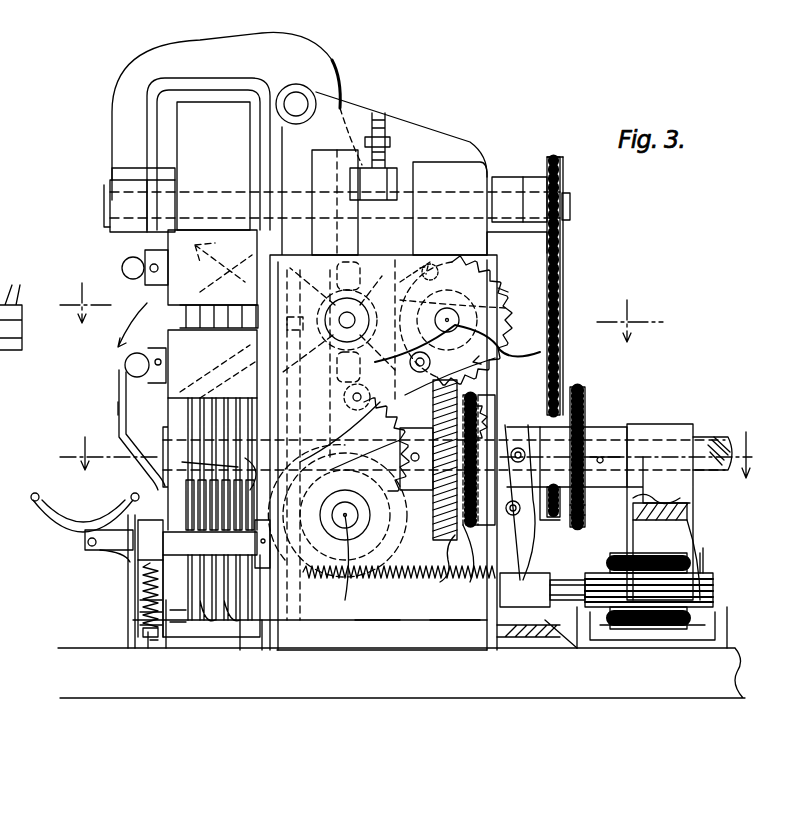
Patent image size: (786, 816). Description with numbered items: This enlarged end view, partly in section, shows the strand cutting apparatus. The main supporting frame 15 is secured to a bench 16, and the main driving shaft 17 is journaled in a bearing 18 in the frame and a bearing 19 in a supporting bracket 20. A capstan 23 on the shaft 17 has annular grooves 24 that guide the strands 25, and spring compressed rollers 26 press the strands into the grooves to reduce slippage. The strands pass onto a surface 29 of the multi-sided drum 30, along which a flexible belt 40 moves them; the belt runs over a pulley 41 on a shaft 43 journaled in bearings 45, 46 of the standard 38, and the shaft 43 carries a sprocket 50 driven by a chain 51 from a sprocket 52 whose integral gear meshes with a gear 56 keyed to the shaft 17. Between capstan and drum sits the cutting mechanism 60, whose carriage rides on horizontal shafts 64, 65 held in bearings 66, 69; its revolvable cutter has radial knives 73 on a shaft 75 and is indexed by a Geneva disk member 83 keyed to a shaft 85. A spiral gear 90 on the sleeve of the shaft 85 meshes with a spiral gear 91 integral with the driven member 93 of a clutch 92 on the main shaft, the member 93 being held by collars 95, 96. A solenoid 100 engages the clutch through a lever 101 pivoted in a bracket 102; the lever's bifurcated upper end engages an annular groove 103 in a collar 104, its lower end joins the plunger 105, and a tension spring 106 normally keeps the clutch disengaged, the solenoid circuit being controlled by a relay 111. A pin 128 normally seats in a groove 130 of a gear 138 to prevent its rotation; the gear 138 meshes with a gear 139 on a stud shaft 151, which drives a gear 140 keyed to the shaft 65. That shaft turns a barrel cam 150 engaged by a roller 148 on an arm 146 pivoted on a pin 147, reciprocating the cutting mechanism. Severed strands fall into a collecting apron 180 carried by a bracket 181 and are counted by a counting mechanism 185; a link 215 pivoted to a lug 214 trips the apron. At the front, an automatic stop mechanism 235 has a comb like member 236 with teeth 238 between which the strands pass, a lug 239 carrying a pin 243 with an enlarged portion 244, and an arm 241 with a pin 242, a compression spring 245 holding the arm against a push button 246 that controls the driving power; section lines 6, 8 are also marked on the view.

The main supporting frame 15 is at (412, 612).
The bench 16 is at (706, 684).
The main driving shaft 17 is at (705, 440).
The bearing 18 is at (262, 392).
The bearing 19 is at (660, 402).
The supporting bracket 20 is at (690, 536).
The capstan 23 is at (174, 406).
The annular grooves 24 is at (257, 626).
The strands 25 is at (238, 467).
The spring compressed rollers 26 is at (183, 287).
The surfaces 29 is at (124, 362).
The multi-sided drum 30 is at (112, 413).
The standard 38 is at (345, 34).
The flexible belt 40 is at (193, 102).
The pulley 41 is at (112, 168).
The shaft 43 is at (570, 206).
The bearing 45 is at (122, 201).
The bearing 46 is at (502, 177).
The sprocket 50 is at (560, 176).
The sprocket chain 51 is at (562, 262).
The sprocket 52 is at (582, 512).
The gear 56 is at (586, 396).
The cutting mechanism 60 is at (250, 268).
The horizontal shaft 64 is at (298, 103).
The horizontal shaft 65 is at (323, 575).
The bearing 66 is at (316, 92).
The bearing 69 is at (373, 560).
The knives 73 is at (229, 245).
The shaft 75 is at (398, 292).
The disk member 83 is at (510, 293).
The shaft 85 is at (506, 309).
The spiral gear 90 is at (470, 393).
The spiral gear 91 is at (450, 579).
The clutch 92 is at (520, 405).
The driven member 93 is at (448, 522).
The collar 95 is at (349, 407).
The collar 96 is at (479, 422).
The solenoid 100 is at (712, 575).
The lever 101 is at (522, 582).
The bracket 102 is at (497, 646).
The annular groove 103 is at (555, 480).
The collar 104 is at (535, 530).
The plunger 105 is at (566, 652).
The tension spring 106 is at (455, 638).
The relay 111 is at (457, 160).
The pin 128 is at (473, 308).
The groove 130 is at (420, 285).
The gear 138 is at (520, 352).
The gear 139 is at (260, 306).
The gear 140 is at (416, 560).
The arm 146 is at (262, 550).
The pin 147 is at (280, 646).
The roller 148 is at (258, 641).
The barrel type cam 150 is at (377, 640).
The stud shaft 151 is at (256, 357).
The collecting apron 180 is at (51, 500).
The bracket 181 is at (146, 579).
The counting mechanism 185 is at (351, 130).
The lug 214 is at (85, 541).
The horizontal link 215 is at (128, 562).
The automatic stop mechanism 235 is at (176, 656).
The comb like member 236 is at (133, 499).
The teeth 238 is at (245, 438).
The lug 239 is at (140, 591).
The arm 241 is at (147, 634).
The pin 242 is at (140, 622).
The pin 243 is at (143, 606).
The enlarged portion 244 is at (168, 656).
The compression spring 245 is at (145, 616).
The push button 246 is at (153, 642).
The section line 6 is at (424, 455).
The section line 8 is at (361, 311).